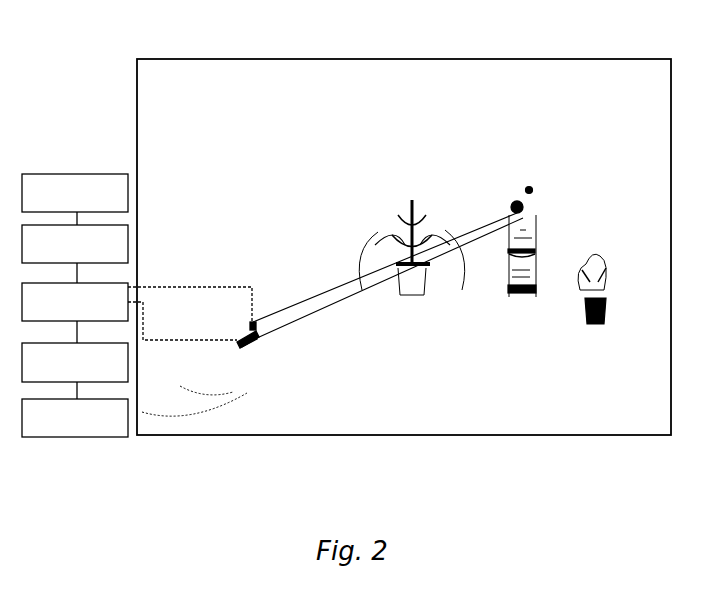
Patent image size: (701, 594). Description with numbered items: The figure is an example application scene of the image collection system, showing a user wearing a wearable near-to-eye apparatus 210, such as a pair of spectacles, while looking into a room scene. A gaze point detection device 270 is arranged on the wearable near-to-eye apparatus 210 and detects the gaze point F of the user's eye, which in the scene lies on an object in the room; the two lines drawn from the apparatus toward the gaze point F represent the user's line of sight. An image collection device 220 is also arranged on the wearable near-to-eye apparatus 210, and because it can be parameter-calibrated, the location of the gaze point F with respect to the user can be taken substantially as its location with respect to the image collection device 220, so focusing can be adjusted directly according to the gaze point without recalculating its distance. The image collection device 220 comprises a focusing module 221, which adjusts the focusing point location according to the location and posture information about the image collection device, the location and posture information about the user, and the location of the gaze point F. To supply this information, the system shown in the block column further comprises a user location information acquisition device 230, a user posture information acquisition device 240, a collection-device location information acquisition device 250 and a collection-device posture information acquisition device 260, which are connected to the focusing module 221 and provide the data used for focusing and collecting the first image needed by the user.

The wearable near-to-eye apparatus 210 is at (258, 346).
The image collection device 220 is at (245, 350).
The focusing module 221 is at (137, 311).
The user location information acquisition device 230 is at (75, 193).
The user posture information acquisition device 240 is at (75, 244).
The collection-device location information acquisition device 250 is at (75, 362).
The collection-device posture information acquisition device 260 is at (75, 418).
The gaze point detection device 270 is at (253, 322).
The gaze point F is at (517, 207).